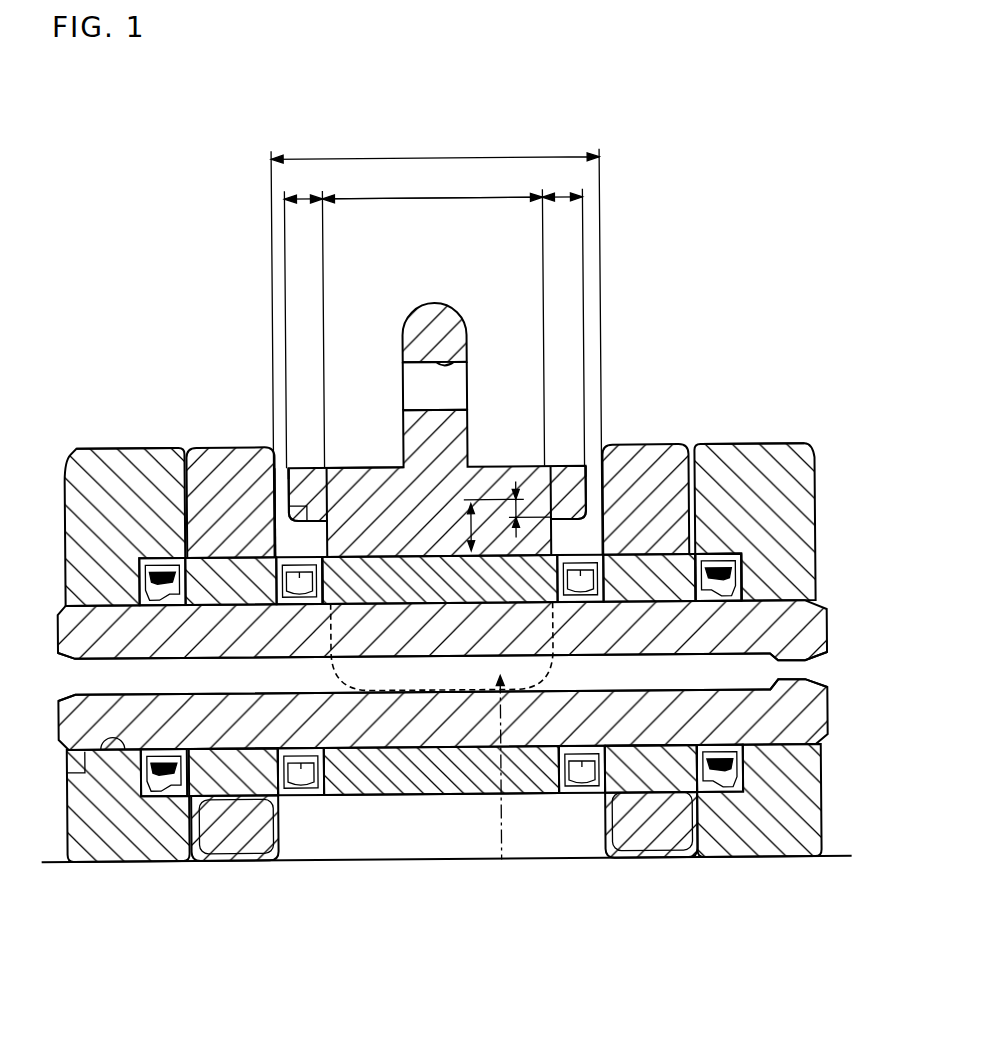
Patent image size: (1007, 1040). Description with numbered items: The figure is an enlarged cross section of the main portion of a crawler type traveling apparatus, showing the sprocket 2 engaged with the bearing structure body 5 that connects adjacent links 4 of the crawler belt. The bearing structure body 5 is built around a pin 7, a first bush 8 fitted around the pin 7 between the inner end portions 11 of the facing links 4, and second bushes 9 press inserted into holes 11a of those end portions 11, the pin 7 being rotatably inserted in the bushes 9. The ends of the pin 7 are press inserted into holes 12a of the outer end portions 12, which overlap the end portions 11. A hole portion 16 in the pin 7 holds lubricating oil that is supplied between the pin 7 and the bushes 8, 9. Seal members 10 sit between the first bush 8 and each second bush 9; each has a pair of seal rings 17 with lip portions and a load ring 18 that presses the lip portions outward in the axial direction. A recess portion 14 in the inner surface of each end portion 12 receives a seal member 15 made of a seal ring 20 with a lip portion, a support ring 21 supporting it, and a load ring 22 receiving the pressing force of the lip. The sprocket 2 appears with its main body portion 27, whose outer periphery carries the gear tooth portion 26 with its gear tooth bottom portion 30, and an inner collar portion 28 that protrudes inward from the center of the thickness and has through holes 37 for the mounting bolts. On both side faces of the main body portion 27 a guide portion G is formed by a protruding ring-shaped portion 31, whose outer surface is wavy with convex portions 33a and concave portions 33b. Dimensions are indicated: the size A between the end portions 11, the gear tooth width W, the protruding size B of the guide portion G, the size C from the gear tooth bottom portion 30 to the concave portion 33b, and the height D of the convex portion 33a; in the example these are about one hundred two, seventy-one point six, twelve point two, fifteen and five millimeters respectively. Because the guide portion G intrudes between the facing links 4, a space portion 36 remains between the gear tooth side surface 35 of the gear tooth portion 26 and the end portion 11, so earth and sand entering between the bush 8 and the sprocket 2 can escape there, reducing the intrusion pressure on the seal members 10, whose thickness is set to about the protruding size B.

The sprocket 2 is at (383, 326).
The link 4 is at (155, 449).
The bearing structure body 5 is at (408, 800).
The pin 7 is at (795, 632).
The first bush 8 is at (445, 797).
The second bush 9 is at (240, 793).
The seal member 10 is at (297, 585).
The end portion 11 is at (240, 458).
The hole 11a is at (222, 803).
The end portion 12 is at (116, 460).
The hole 12a is at (104, 770).
The recess portion 14 is at (735, 565).
The seal member 15 is at (160, 770).
The hole portion 16 is at (60, 668).
The seal ring 17 is at (566, 604).
The load ring 18 is at (580, 585).
The seal ring 20 is at (700, 590).
The support ring 21 is at (722, 585).
The load ring 22 is at (718, 576).
The gear tooth portion 26 is at (442, 789).
The main body portion 27 is at (385, 463).
The inner collar portion 28 is at (440, 318).
The gear tooth bottom portion 30 is at (452, 590).
The protruding ring-shaped portion 31 is at (312, 462).
The convex portion 33a is at (231, 676).
The concave portion 33b is at (204, 458).
The gear tooth side surface 35 is at (365, 618).
The space portion 36 is at (340, 467).
The through hole 37 is at (456, 365).
The size between end portions A is at (436, 339).
The protruding size B is at (434, 315).
The gear tooth width W is at (432, 181).
The size from gear tooth bottom to concave portion C is at (484, 525).
The height size D is at (520, 503).
The guide portion G is at (314, 465).